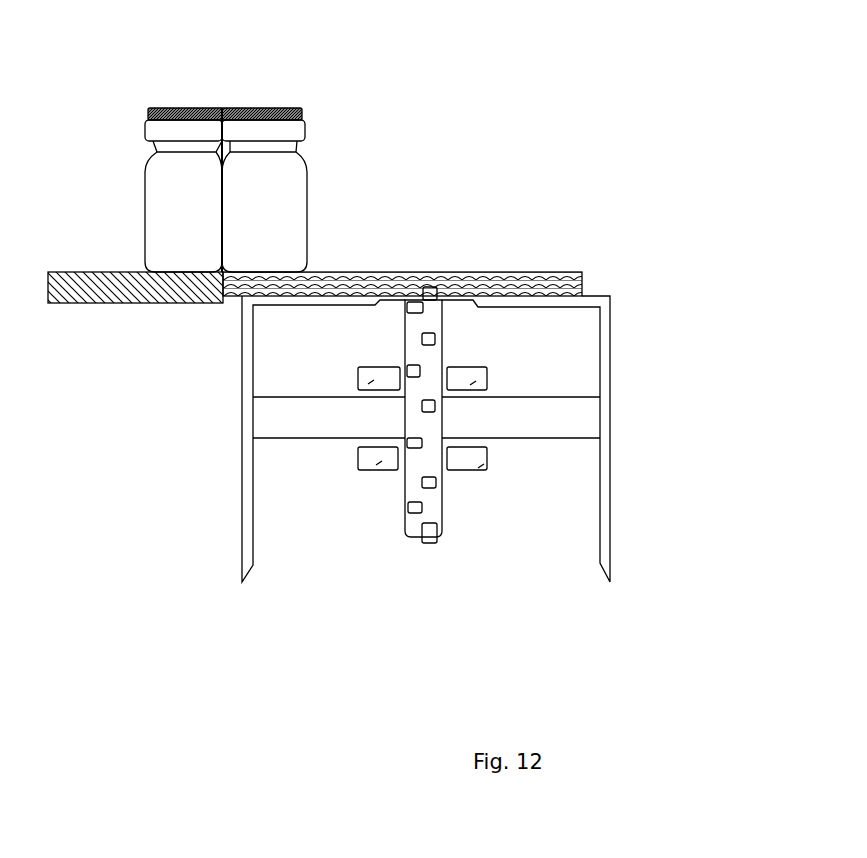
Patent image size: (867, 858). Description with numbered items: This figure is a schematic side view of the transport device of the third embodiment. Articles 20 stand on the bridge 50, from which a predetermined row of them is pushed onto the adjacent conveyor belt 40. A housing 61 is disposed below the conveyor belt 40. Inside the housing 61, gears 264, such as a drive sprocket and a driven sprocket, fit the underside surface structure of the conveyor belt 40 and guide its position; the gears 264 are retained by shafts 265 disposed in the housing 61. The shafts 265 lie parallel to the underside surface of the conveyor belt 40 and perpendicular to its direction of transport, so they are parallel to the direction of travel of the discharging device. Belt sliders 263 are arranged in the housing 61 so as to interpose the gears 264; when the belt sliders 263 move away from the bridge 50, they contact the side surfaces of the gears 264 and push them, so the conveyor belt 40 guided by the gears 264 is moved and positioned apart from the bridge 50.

The articles 20 is at (278, 108).
The conveyor belt 40 is at (566, 272).
The bridge 50 is at (100, 303).
The housing 61 is at (610, 545).
The belt sliders 263 is at (362, 385).
The gears 264 is at (405, 537).
The shafts 265 is at (580, 418).